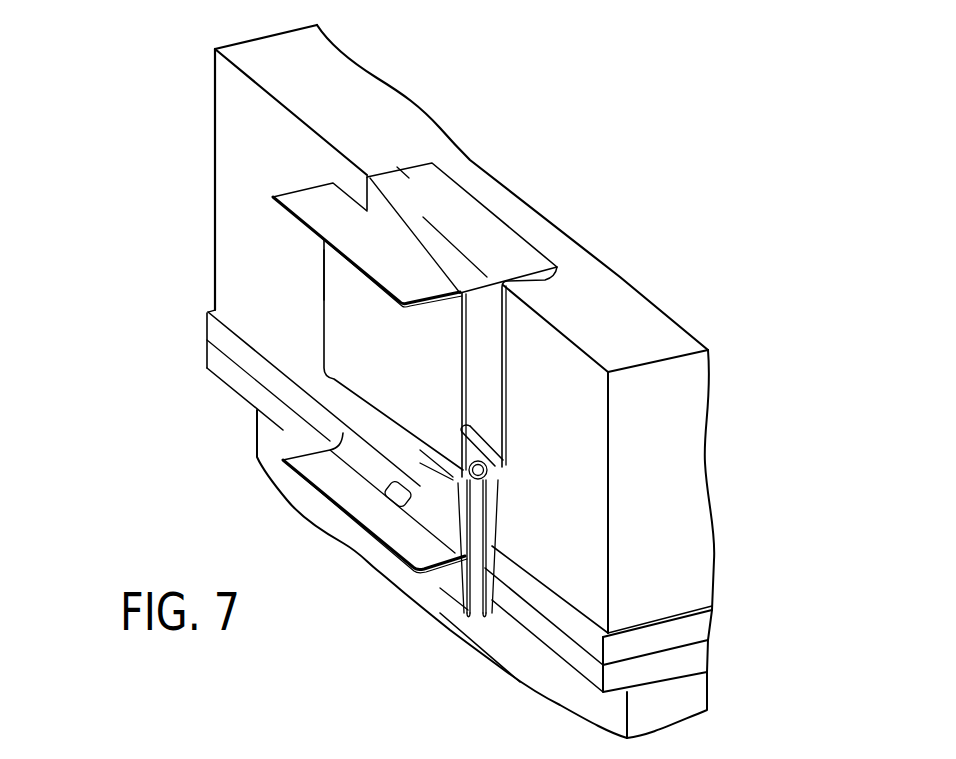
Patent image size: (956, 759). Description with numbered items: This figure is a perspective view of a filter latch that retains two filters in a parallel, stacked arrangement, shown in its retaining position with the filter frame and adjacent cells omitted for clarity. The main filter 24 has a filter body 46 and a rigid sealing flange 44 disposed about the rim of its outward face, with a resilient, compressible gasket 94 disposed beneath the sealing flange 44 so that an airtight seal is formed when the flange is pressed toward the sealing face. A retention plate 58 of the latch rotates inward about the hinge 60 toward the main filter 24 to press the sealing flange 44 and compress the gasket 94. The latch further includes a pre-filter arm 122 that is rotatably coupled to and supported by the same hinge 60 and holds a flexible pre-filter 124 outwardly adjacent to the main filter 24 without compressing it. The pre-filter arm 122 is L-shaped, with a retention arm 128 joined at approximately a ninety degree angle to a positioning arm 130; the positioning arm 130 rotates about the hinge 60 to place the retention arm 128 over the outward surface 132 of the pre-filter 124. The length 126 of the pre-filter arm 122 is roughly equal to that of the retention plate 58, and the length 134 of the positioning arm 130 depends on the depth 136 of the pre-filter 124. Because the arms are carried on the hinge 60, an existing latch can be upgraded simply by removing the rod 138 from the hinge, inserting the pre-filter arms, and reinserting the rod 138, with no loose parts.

The main filter 24 is at (243, 473).
The sealing flange 44 is at (702, 627).
The filter body 46 is at (690, 703).
The retention plate 58 is at (347, 422).
The hinge 60 is at (466, 434).
The gasket 94 is at (700, 657).
The pre-filter arm 122 is at (309, 268).
The pre-filter 124 is at (197, 125).
The length of the pre-filter arms 126 is at (632, 258).
The retention arm 128 is at (317, 202).
The positioning arm 130 is at (336, 311).
The outward surface 132 is at (326, 96).
The length of the positioning arm 134 is at (508, 465).
The depth of the pre-filter 136 is at (685, 358).
The rod 138 is at (490, 481).